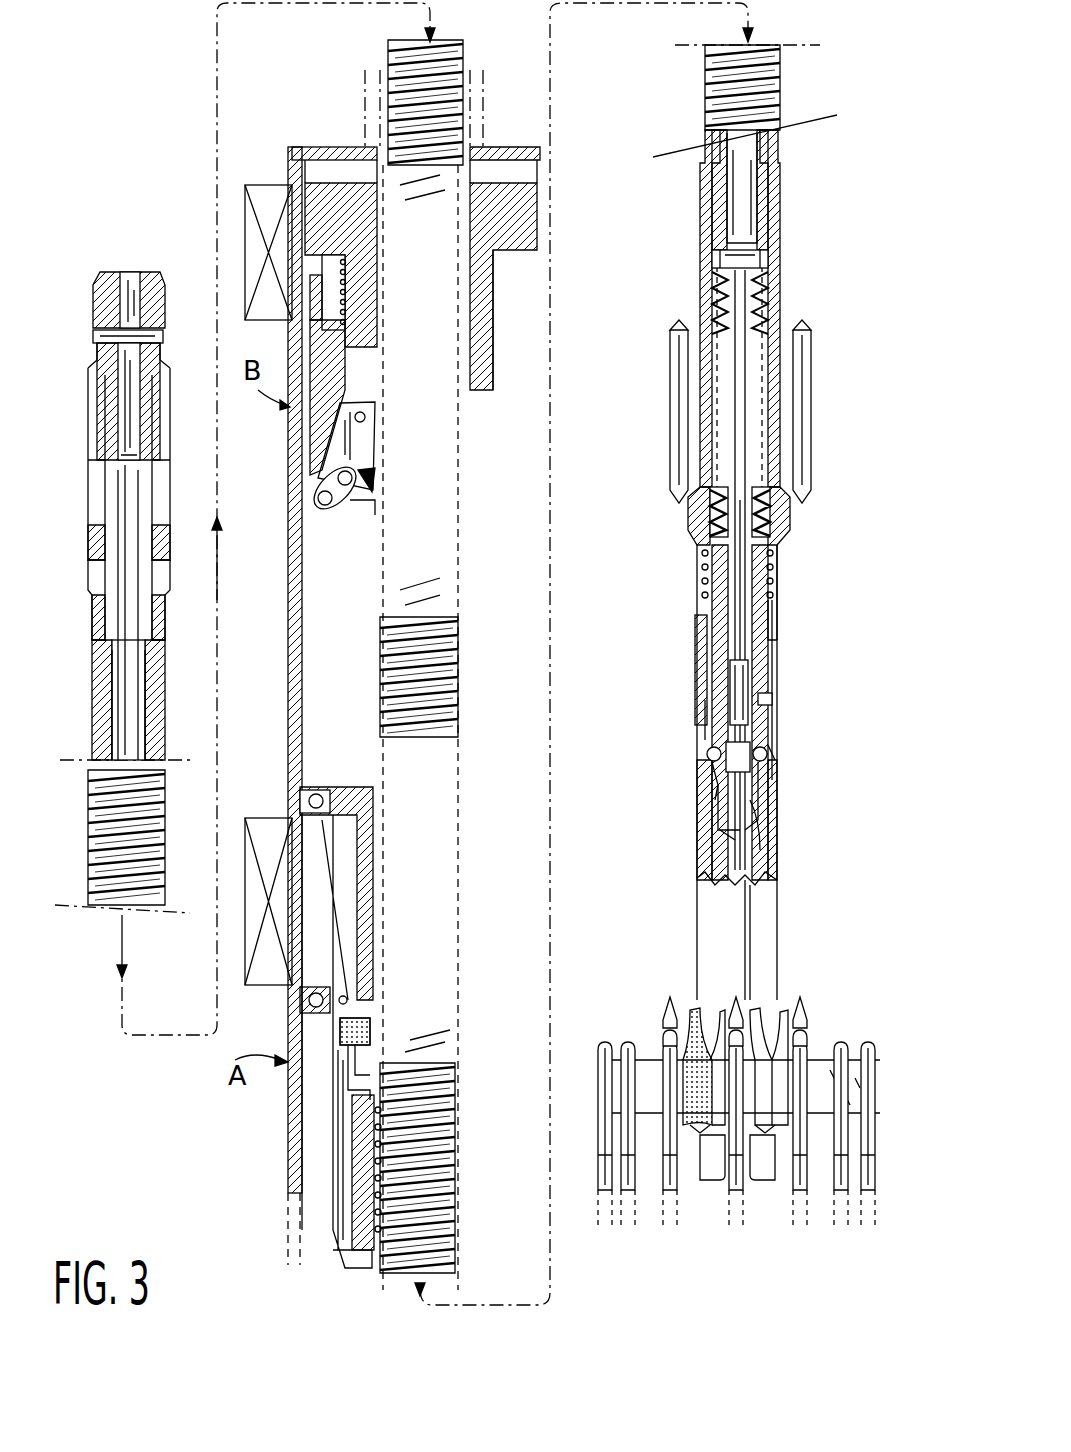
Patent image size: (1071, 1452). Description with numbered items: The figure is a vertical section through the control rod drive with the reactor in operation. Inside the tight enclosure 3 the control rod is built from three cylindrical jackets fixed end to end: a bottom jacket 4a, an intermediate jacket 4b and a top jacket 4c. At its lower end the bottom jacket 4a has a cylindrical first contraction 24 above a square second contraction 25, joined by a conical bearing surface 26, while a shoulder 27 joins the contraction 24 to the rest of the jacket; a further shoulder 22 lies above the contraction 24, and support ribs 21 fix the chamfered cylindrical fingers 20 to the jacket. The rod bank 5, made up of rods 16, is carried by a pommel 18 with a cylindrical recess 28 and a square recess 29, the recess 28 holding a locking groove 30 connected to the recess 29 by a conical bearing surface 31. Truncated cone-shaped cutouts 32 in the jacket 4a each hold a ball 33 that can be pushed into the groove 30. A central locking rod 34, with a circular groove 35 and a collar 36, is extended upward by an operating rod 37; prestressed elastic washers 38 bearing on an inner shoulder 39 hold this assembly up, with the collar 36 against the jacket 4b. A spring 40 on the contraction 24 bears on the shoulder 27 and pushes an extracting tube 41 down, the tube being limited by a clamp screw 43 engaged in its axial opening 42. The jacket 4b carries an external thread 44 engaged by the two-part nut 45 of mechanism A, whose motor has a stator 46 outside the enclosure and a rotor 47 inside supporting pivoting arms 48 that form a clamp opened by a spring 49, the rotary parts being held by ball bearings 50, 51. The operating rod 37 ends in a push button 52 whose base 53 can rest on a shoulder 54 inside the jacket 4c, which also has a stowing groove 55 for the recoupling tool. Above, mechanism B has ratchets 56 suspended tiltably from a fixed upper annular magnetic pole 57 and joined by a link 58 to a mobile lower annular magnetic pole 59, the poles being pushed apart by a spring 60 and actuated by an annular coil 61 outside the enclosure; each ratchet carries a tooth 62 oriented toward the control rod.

The tight enclosure 3 is at (288, 1192).
The bottom jacket 4a is at (700, 275).
The intermediate jacket 4b is at (100, 752).
The top jacket 4c is at (95, 615).
The rod bank 5 is at (655, 1040).
The rods 16 is at (862, 1170).
The pommel 18 is at (740, 945).
The cylindrical fingers 20 is at (678, 400).
The support ribs 21 is at (800, 415).
The shoulder 22 is at (785, 540).
The first contraction 24 is at (770, 625).
The second contraction 25 is at (722, 832).
The conical bearing surface 26 is at (712, 770).
The shoulder 27 is at (775, 560).
The cylindrical recess 28 is at (705, 735).
The square recess 29 is at (763, 820).
The locking groove 30 is at (768, 770).
The conical bearing surface 31 is at (720, 800).
The truncated cone-shaped cutouts 32 is at (758, 785).
The ball 33 is at (708, 756).
The locking rod 34 is at (740, 460).
The circular groove 35 is at (730, 690).
The collar 36 is at (760, 256).
The operating rod 37 is at (110, 700).
The elastic washers 38 is at (775, 316).
The shoulder 39 is at (700, 510).
The spring 40 is at (700, 570).
The extracting tube 41 is at (697, 645).
The axial opening 42 is at (772, 660).
The clamp screw 43 is at (775, 700).
The external thread 44 is at (780, 85).
The two-part nut 45 is at (365, 1210).
The stator 46 is at (262, 945).
The rotor 47 is at (365, 830).
The pivoting arms 48 is at (338, 1127).
The spring 49 is at (368, 1030).
The ball bearing 50 is at (305, 1003).
The ball bearing 51 is at (305, 800).
The push button 52 is at (158, 290).
The base 53 is at (100, 458).
The shoulder 54 is at (100, 512).
The stowing groove 55 is at (180, 560).
The ratchet 56 is at (368, 428).
The upper annular magnetic pole 57 is at (330, 200).
The link 58 is at (340, 512).
The lower annular magnetic pole 59 is at (320, 420).
The spring 60 is at (345, 280).
The annular coil 61 is at (255, 185).
The tooth 62 is at (372, 482).